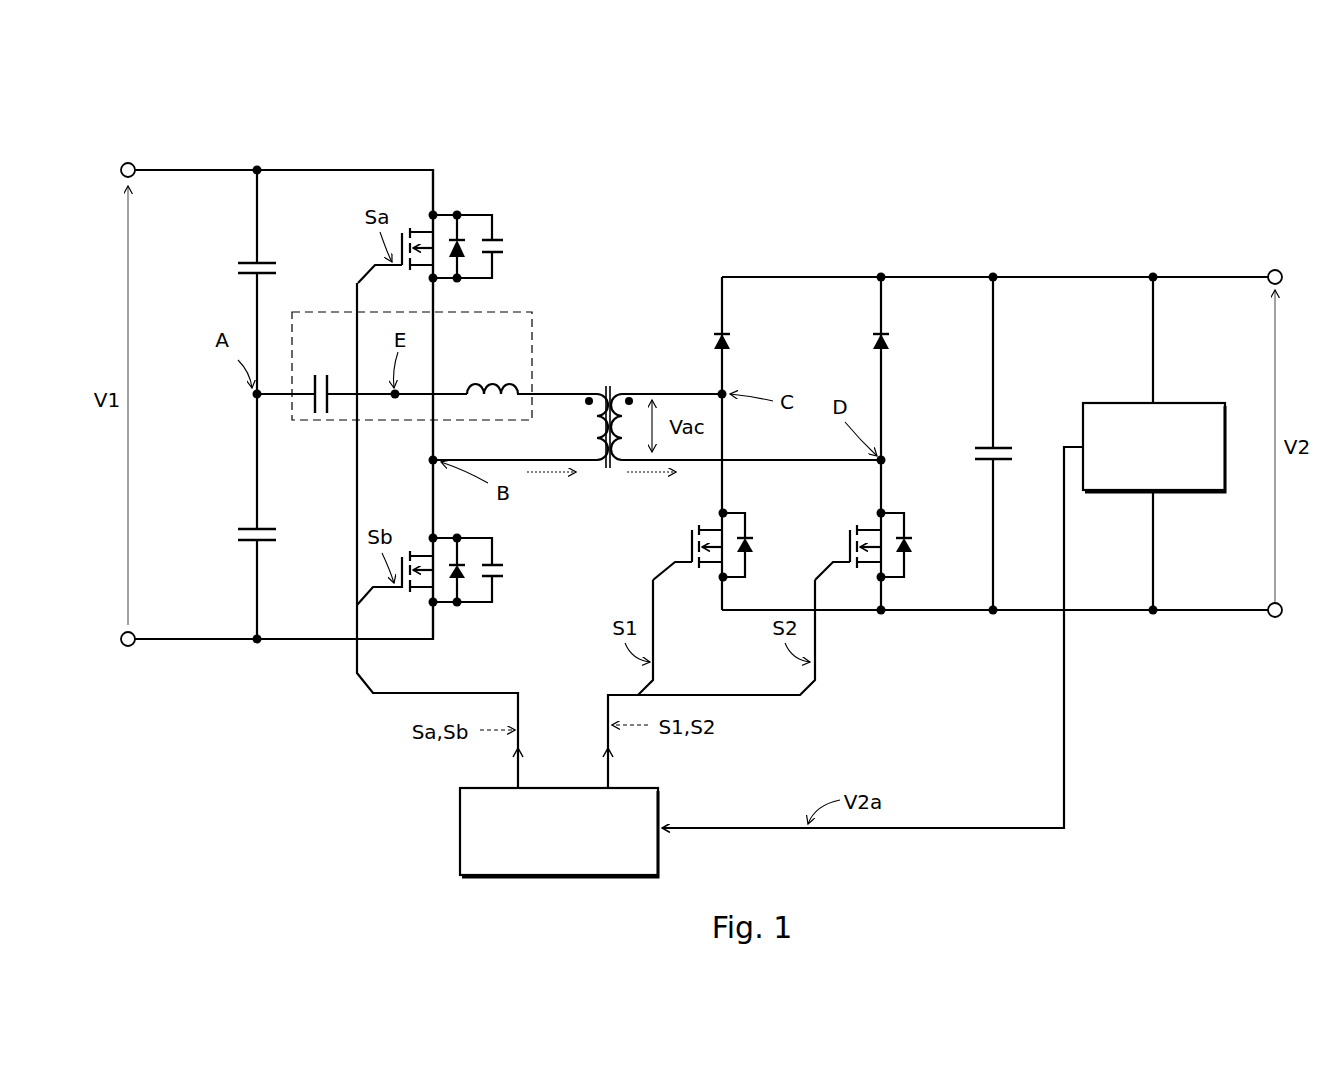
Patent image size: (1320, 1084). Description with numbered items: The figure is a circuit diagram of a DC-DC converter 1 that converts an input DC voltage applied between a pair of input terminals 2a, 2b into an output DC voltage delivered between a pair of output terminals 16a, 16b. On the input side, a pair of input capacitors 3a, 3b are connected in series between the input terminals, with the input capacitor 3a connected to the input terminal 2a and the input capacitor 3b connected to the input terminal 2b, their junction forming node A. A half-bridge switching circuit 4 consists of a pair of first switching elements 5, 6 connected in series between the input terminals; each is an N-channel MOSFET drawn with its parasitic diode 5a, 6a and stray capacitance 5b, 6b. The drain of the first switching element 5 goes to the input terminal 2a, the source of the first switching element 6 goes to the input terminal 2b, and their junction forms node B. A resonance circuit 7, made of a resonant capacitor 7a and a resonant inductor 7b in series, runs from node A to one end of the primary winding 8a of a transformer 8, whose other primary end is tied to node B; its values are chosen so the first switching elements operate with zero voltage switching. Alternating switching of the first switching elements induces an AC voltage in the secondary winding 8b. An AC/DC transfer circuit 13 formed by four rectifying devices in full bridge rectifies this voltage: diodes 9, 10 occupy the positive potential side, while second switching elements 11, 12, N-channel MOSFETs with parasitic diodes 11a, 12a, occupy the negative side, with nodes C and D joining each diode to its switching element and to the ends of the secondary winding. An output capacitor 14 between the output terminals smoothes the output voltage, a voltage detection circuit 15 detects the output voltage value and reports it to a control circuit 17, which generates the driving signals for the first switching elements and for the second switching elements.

The DC-DC converter 1 is at (754, 99).
The input terminal 2a is at (130, 162).
The input terminal 2b is at (130, 648).
The input capacitor 3a is at (267, 260).
The input capacitor 3b is at (267, 527).
The switching circuit 4 is at (427, 134).
The first switching element 5 is at (425, 228).
The parasitic diode 5a is at (463, 232).
The stray capacitance 5b is at (500, 232).
The first switching element 6 is at (425, 552).
The parasitic diode 6a is at (462, 605).
The stray capacitance 6b is at (500, 585).
The resonance circuit 7 is at (510, 311).
The resonant capacitor 7a is at (318, 373).
The resonant inductor 7b is at (478, 373).
The transformer 8 is at (603, 324).
The primary winding 8a is at (590, 390).
The secondary winding 8b is at (627, 390).
The diode 9 is at (733, 342).
The diode 10 is at (892, 342).
The second switching element 11 is at (689, 540).
The parasitic diode 11a is at (749, 536).
The second switching element 12 is at (847, 540).
The parasitic diode 12a is at (908, 536).
The AC/DC transfer circuit 13 is at (819, 246).
The output capacitor 14 is at (1004, 447).
The voltage detection circuit 15 is at (1178, 402).
The output terminal 16a is at (1275, 268).
The output terminal 16b is at (1275, 620).
The control circuit 17 is at (630, 787).